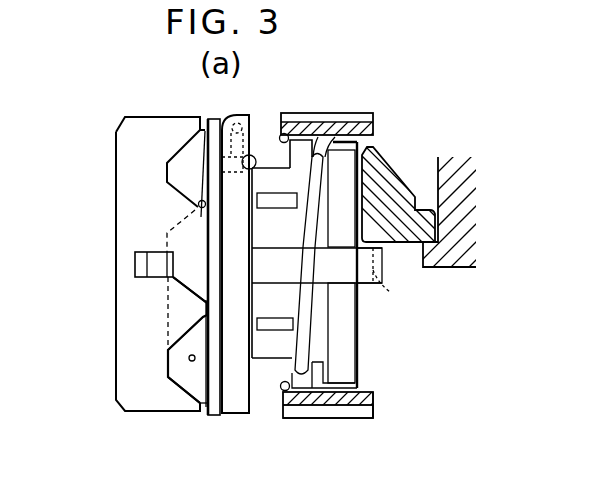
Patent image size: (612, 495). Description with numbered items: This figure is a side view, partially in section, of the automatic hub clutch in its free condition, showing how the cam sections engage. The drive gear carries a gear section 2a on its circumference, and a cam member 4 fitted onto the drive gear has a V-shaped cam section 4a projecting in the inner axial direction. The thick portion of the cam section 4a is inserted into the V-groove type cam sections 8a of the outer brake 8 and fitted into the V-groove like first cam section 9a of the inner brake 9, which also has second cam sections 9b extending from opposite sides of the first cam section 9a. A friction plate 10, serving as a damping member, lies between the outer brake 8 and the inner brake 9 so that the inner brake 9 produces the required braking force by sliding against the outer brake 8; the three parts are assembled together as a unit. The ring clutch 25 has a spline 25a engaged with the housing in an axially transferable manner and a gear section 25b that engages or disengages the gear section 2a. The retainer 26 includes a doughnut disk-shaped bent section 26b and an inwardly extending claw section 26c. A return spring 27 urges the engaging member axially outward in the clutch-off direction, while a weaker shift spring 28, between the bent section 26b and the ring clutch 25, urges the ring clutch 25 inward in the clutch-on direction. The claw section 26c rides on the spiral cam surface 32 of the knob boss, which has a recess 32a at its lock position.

The gear section 2a is at (372, 405).
The cam member 4 is at (215, 415).
The cam section 4a is at (197, 273).
The outer brake 8 is at (141, 399).
The cam sections 8a is at (193, 301).
The inner brake 9 is at (167, 170).
The first cam section 9a is at (193, 360).
The second cam sections 9b is at (200, 206).
The friction plate 10 is at (137, 272).
The ring clutch 25 is at (327, 402).
The spline 25a is at (350, 410).
The gear section 25b is at (292, 417).
The retainer 26 is at (239, 385).
The bent section 26b is at (355, 243).
The claw section 26c is at (383, 277).
The return spring 27 is at (347, 130).
The shift spring 28 is at (298, 130).
The cam surface 32 is at (375, 150).
The recess 32a is at (438, 208).